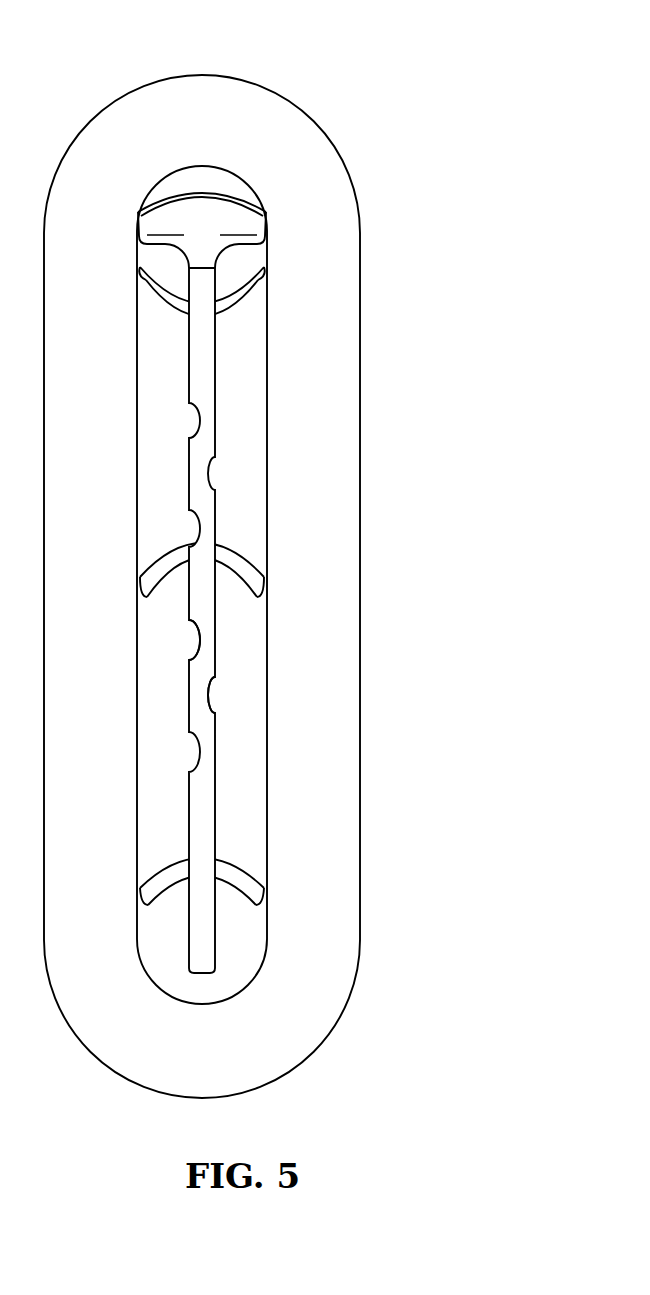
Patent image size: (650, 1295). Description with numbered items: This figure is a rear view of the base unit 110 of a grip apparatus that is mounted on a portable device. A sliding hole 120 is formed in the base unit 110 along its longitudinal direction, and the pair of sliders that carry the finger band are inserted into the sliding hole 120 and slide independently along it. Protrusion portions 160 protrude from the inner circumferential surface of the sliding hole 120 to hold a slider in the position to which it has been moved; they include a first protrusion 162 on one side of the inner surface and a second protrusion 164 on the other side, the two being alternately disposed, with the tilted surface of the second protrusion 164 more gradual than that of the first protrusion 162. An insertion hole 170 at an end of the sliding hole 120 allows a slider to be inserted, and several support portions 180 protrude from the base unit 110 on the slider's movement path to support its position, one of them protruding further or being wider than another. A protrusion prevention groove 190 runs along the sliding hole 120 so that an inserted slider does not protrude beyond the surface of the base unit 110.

The base unit 110 is at (203, 100).
The sliding hole 120 is at (203, 790).
The protrusion portion 160 is at (356, 667).
The first protrusion 162 is at (198, 635).
The second protrusion 164 is at (210, 697).
The insertion hole 170 is at (226, 217).
The support portion 180 is at (265, 272).
The protrusion prevention groove 190 is at (243, 401).